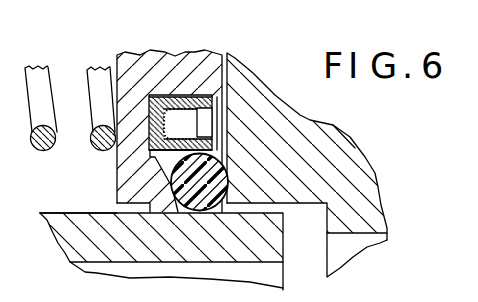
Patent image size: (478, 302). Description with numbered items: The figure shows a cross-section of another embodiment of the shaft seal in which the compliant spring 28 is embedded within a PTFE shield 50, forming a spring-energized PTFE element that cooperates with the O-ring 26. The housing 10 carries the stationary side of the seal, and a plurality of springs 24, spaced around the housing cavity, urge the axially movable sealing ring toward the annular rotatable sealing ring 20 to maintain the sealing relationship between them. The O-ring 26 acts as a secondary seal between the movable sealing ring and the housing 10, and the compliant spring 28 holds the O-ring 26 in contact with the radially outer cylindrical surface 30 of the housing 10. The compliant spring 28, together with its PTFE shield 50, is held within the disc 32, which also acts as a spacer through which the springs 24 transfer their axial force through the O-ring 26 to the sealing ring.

The housing 10 is at (152, 245).
The rotatable sealing ring 20 is at (321, 203).
The springs 24 is at (52, 150).
The O-ring 26 is at (227, 180).
The compliant spring 28 is at (180, 110).
The radially outer cylindrical surface 30 is at (65, 213).
The disc 32 is at (182, 65).
The PTFE shield 50 is at (222, 133).